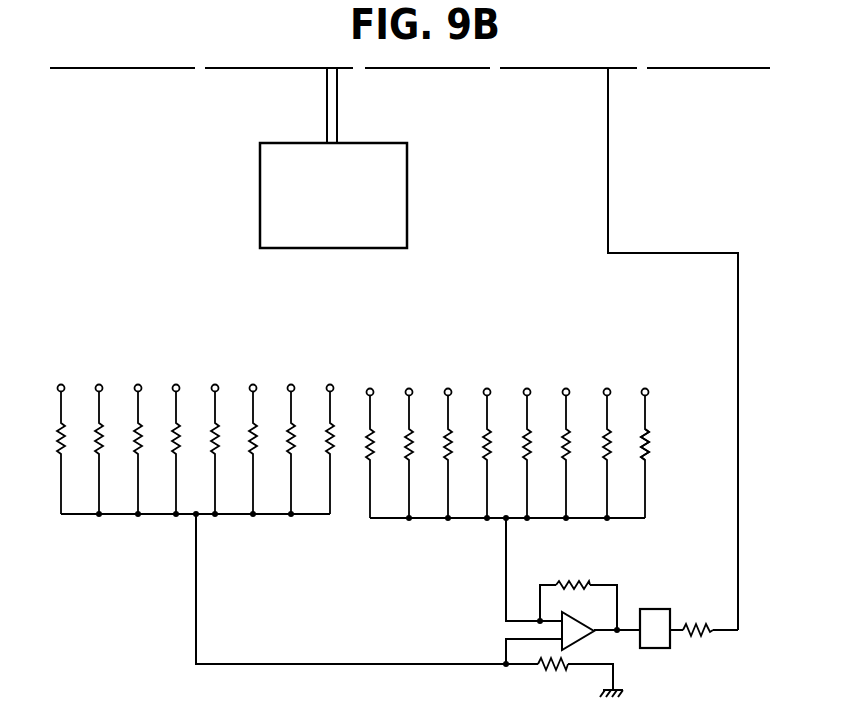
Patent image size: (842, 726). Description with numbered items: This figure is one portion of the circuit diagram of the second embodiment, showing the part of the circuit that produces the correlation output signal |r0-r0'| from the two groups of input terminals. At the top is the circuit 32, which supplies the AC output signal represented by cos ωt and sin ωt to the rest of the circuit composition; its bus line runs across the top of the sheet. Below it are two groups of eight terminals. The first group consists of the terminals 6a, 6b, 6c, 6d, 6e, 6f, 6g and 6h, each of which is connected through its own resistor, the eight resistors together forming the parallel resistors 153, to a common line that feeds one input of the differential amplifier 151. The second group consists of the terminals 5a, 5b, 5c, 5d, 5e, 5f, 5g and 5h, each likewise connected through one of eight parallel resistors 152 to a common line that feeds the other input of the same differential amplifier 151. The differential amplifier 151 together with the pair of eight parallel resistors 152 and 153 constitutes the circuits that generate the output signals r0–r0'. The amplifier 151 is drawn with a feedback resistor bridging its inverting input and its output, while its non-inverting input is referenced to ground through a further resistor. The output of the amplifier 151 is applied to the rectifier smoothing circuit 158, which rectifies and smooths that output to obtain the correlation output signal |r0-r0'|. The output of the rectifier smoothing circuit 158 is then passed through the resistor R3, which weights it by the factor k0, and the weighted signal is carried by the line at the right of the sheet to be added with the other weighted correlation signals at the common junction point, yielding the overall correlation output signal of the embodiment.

The circuit 32 is at (409, 191).
The differential amplifier 151 is at (577, 578).
The parallel resistors 152 is at (657, 438).
The parallel resistors 153 is at (54, 481).
The rectifier smoothing circuit 158 is at (660, 609).
The resistor R3 is at (692, 640).
The terminal 6a is at (61, 440).
The terminal 6b is at (99, 440).
The terminal 6c is at (139, 440).
The terminal 6d is at (176, 440).
The terminal 6e is at (215, 440).
The terminal 6f is at (254, 440).
The terminal 6g is at (291, 440).
The terminal 6h is at (330, 440).
The terminal 5a is at (370, 443).
The terminal 5b is at (409, 443).
The terminal 5c is at (449, 443).
The terminal 5d is at (487, 443).
The terminal 5e is at (527, 443).
The terminal 5f is at (567, 443).
The terminal 5g is at (607, 443).
The terminal 5h is at (645, 443).